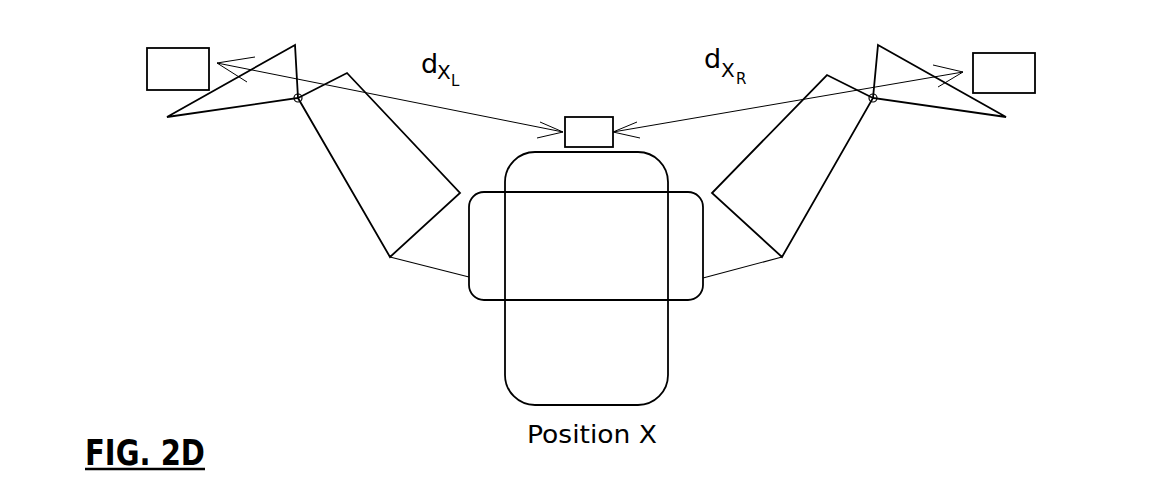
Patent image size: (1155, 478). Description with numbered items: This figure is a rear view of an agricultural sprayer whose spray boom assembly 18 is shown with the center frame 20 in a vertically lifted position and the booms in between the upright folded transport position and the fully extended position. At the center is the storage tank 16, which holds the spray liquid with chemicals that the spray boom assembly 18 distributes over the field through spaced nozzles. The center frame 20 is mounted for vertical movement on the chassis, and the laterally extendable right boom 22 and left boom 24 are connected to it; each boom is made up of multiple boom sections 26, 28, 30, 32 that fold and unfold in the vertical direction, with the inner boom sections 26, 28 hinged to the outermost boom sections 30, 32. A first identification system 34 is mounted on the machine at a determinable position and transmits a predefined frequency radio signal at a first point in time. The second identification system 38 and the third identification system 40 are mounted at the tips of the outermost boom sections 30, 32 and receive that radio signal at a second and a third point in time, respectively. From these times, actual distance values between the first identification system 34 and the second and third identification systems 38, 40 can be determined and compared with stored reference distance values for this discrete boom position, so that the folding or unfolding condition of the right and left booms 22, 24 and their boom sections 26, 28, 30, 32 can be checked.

The storage tank 16 is at (668, 355).
The spray boom assembly 18 is at (423, 278).
The center frame 20 is at (575, 300).
The right boom 22 is at (859, 173).
The left boom 24 is at (313, 212).
The boom section 26 is at (815, 203).
The boom section 28 is at (347, 185).
The outermost boom section 30 is at (927, 108).
The outermost boom section 32 is at (218, 118).
The first identification system 34 is at (583, 117).
The second identification system 38 is at (1035, 92).
The third identification system 40 is at (147, 83).